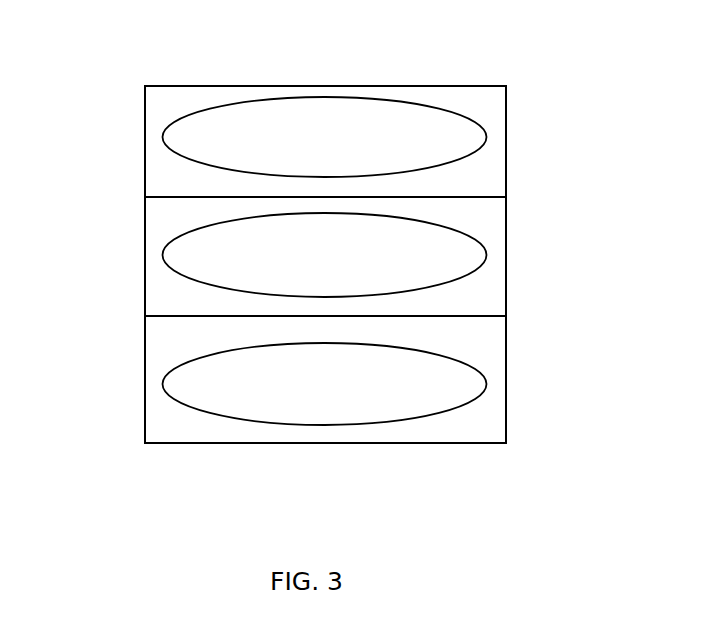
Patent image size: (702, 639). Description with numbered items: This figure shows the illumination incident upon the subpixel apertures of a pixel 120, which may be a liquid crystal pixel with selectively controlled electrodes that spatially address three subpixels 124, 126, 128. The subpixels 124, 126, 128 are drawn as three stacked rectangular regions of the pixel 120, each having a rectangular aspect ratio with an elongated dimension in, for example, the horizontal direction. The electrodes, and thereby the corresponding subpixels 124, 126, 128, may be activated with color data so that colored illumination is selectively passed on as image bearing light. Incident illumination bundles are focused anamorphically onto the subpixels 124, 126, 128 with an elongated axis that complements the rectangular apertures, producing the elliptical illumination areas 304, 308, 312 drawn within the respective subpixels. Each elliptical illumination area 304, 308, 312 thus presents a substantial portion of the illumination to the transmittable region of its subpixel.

The pixel 120 is at (627, 39).
The subpixel 124 is at (145, 139).
The subpixel 126 is at (145, 258).
The subpixel 128 is at (145, 375).
The elliptical illumination area 304 is at (344, 147).
The elliptical illumination area 308 is at (344, 264).
The elliptical illumination area 312 is at (344, 396).